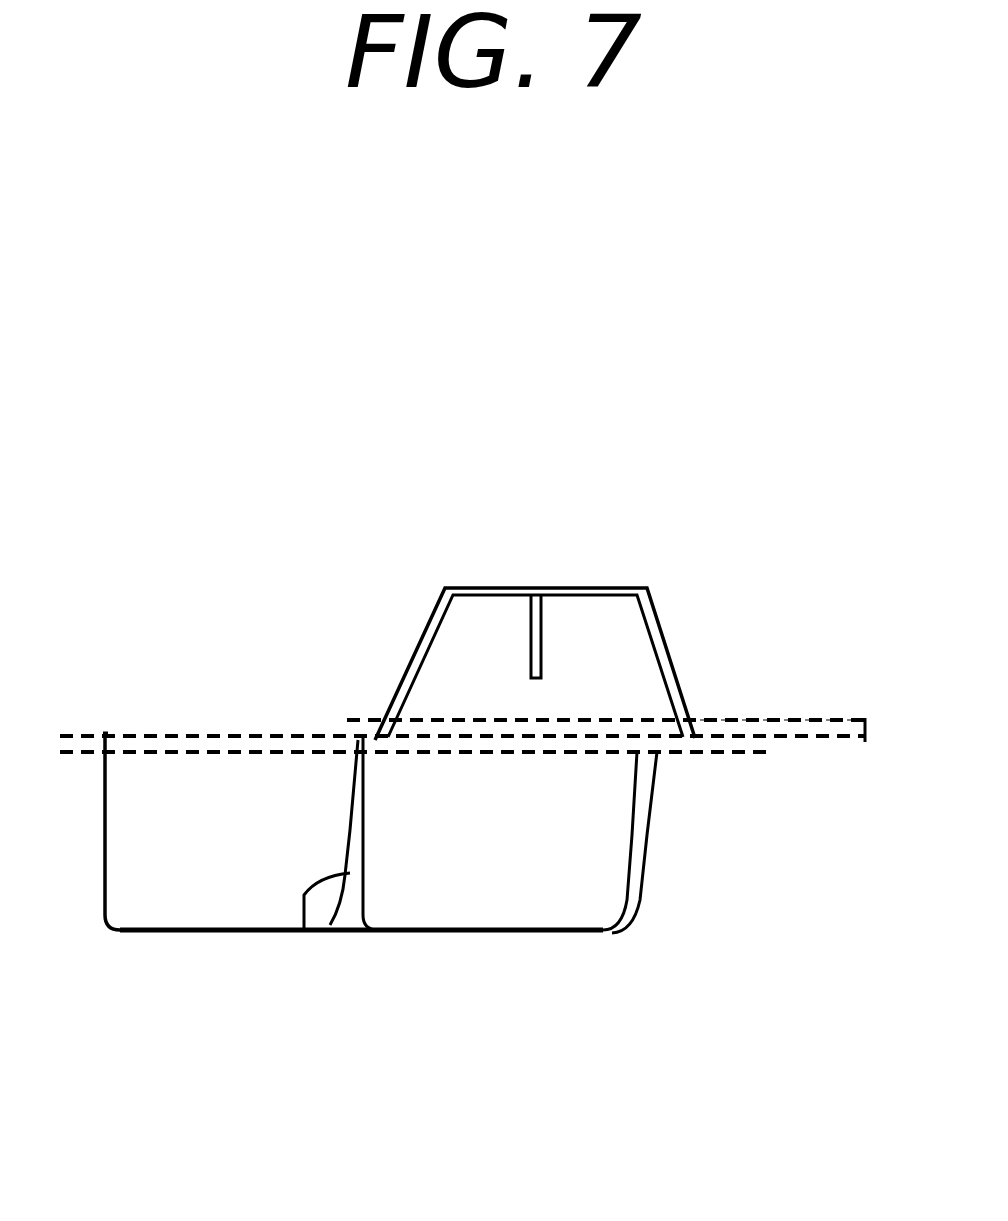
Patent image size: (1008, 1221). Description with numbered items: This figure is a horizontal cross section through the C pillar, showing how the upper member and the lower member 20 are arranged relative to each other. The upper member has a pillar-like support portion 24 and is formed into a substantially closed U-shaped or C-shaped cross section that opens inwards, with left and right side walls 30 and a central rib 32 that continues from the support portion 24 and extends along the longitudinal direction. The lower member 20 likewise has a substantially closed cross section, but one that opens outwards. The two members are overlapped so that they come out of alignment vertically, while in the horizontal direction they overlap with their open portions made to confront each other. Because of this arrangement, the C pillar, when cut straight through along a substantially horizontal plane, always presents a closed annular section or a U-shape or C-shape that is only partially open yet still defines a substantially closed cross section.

The lower member 20 is at (568, 945).
The support portion 24 is at (710, 597).
The side walls 30 is at (443, 618).
The rib 32 is at (543, 634).